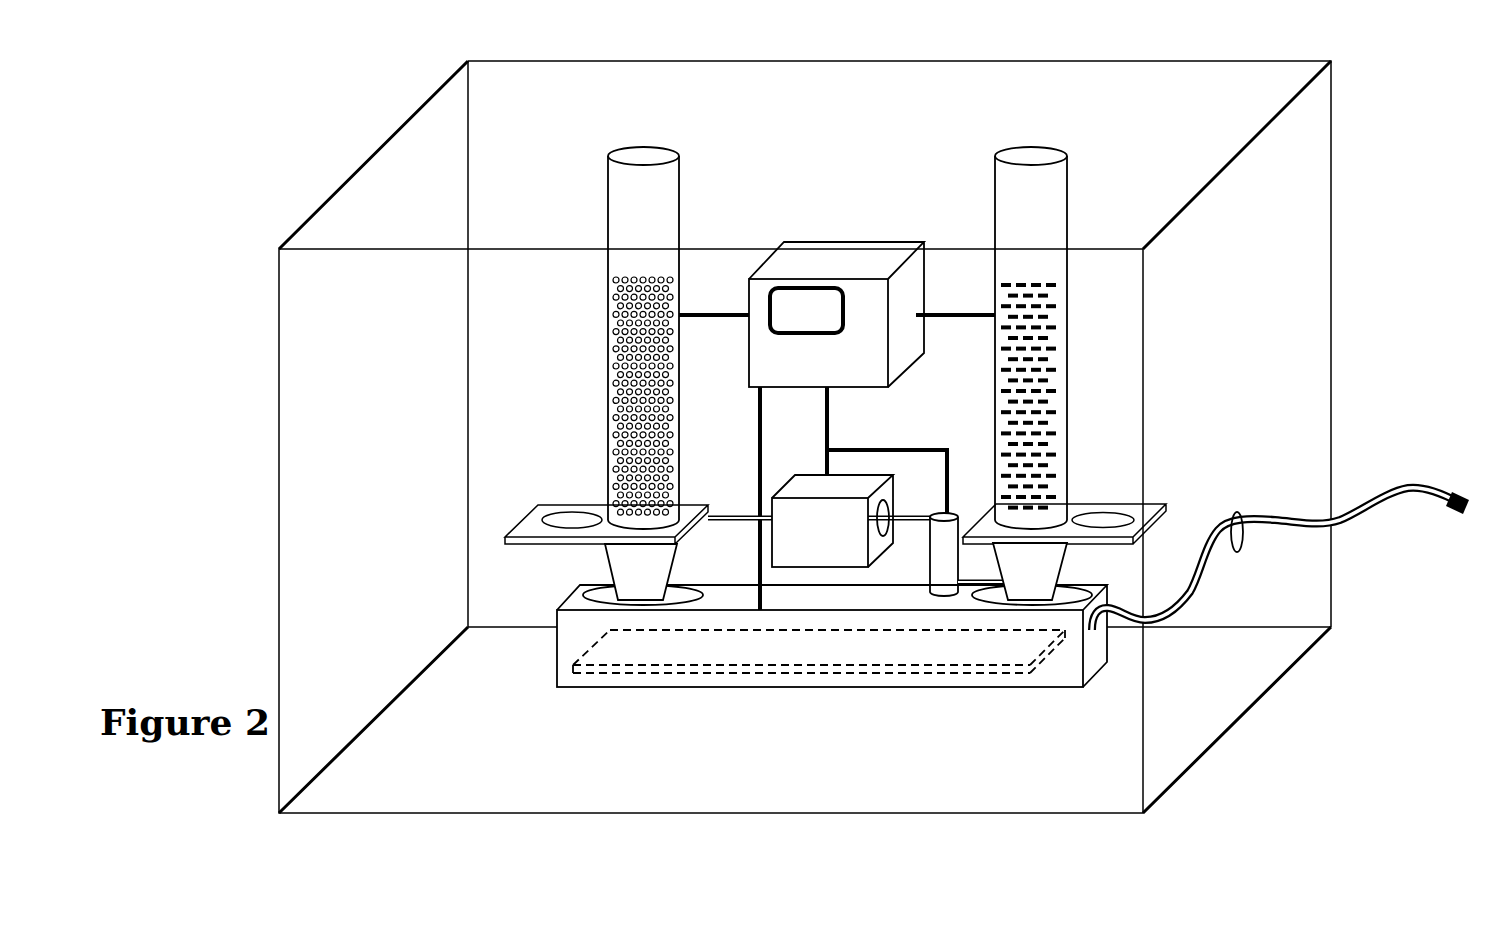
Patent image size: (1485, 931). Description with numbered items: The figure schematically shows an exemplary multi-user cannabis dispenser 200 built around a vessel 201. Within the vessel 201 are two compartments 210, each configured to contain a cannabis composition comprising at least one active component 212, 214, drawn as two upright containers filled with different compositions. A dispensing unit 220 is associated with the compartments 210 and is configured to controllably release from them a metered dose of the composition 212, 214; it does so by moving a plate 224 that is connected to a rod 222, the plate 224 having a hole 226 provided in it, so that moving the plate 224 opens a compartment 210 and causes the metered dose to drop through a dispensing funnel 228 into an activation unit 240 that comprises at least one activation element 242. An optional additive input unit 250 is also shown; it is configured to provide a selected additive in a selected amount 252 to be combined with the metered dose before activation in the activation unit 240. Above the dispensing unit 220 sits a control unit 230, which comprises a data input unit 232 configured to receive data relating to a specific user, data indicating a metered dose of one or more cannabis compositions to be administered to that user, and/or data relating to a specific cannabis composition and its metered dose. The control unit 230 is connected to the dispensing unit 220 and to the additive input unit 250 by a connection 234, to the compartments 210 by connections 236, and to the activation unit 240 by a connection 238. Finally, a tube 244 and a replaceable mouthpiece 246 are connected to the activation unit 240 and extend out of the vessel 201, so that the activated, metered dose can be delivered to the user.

The multi-user cannabis dispenser 200 is at (237, 312).
The vessel 201 is at (1258, 705).
The compartments 210 is at (833, 329).
The cannabis composition comprising at least one active component 212 is at (640, 350).
The cannabis composition comprising at least one active component 214 is at (1030, 347).
The dispensing unit 220 is at (826, 546).
The rod 222 is at (918, 510).
The plate 224 is at (835, 524).
The hole 226 is at (1103, 528).
The dispensing funnel 228 is at (1035, 570).
The control unit 230 is at (844, 299).
The data input unit 232 is at (800, 312).
The connection 234 is at (838, 424).
The connections 236 is at (729, 325).
The connection 238 is at (757, 470).
The activation unit 240 is at (801, 645).
The activation element 242 is at (667, 655).
The tube 244 is at (1280, 523).
The replaceable mouthpiece 246 is at (1458, 480).
The additive input unit 250 is at (930, 555).
The selected additive in a selected amount 252 is at (988, 582).